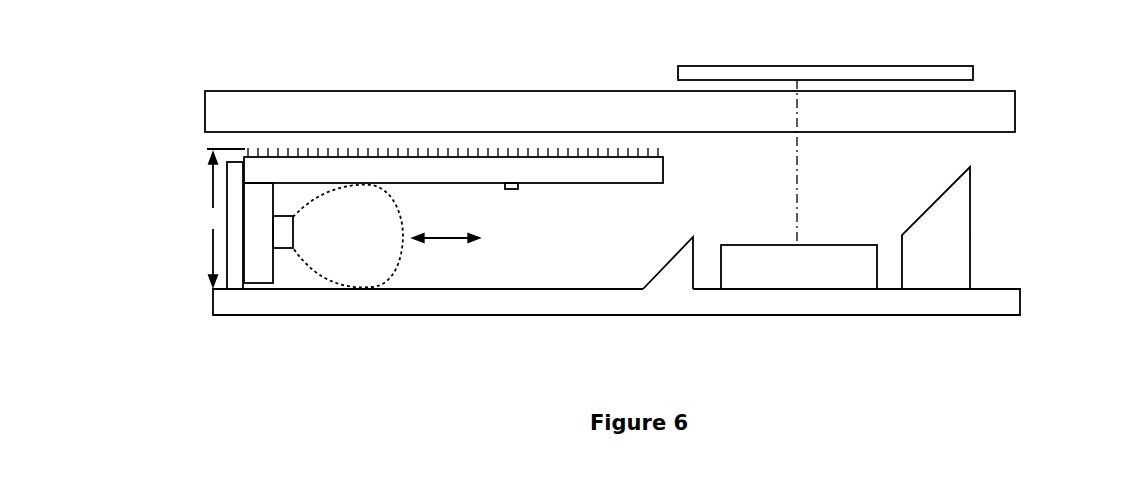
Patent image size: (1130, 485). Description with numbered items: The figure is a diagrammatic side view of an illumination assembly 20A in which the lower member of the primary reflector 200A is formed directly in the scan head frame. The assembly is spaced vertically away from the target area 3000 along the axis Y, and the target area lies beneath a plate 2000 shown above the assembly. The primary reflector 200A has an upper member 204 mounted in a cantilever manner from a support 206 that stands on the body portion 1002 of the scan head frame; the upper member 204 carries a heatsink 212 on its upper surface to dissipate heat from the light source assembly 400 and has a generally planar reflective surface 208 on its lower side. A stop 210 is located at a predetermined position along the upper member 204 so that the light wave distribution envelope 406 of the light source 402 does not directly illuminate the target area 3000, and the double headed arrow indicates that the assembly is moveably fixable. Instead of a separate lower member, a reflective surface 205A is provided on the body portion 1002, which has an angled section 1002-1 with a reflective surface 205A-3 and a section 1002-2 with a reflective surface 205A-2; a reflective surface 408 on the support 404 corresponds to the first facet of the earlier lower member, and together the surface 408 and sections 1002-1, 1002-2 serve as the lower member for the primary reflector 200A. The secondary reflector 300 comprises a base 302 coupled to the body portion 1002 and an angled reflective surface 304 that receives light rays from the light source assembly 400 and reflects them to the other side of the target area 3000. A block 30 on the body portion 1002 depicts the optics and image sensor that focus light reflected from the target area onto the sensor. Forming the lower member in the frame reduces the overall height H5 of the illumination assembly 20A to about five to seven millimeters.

The display or cover glass 2000 is at (283, 91).
The target area 3000 is at (771, 66).
The axis Y is at (797, 182).
The heatsink 212 is at (353, 157).
The stop 210 is at (518, 189).
The reflective surface 208 is at (478, 183).
The upper member 204 is at (695, 173).
The height H5 is at (223, 218).
The illumination assembly 20A is at (188, 158).
The primary reflector 200A is at (203, 178).
The support 206 is at (231, 253).
The support 404 is at (279, 268).
The light source 402 is at (289, 216).
The reflective surface 408 is at (282, 272).
The light source assembly 400 is at (309, 238).
The light wave distribution envelope 406 is at (412, 242).
The reflective surface 205A-2 is at (468, 289).
The reflective surface 205A-3 is at (683, 255).
The reflective surface 205A is at (502, 290).
The body portion 1002 is at (1021, 305).
The angled section 1002-1 is at (672, 268).
The section 1002-2 is at (415, 290).
The block 30 is at (790, 245).
The secondary reflector 300 is at (993, 167).
The base 302 is at (970, 232).
The angled reflective surface 304 is at (917, 215).